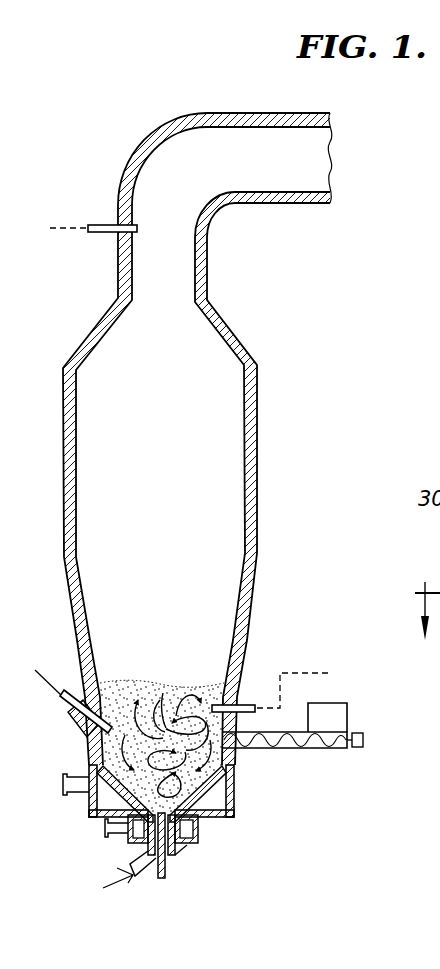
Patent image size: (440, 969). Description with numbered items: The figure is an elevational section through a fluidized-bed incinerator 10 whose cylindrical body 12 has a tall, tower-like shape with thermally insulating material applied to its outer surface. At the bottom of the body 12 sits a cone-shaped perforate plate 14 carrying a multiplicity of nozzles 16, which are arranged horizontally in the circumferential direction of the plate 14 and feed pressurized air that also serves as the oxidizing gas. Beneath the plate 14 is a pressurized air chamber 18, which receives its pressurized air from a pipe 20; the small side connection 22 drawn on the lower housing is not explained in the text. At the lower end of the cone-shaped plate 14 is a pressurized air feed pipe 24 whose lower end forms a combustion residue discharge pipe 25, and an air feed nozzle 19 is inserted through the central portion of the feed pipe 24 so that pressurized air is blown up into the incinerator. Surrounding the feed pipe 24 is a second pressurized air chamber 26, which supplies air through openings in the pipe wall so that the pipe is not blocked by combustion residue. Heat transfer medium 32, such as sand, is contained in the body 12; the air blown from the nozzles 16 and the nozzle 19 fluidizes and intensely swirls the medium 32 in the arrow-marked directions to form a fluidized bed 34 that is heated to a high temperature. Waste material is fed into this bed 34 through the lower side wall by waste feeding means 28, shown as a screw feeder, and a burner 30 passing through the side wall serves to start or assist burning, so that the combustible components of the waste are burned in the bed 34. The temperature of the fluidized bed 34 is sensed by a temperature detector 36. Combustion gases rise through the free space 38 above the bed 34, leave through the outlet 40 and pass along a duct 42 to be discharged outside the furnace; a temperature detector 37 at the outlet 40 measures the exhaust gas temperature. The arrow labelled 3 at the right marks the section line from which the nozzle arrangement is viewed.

The incinerator 10 is at (76, 626).
The cylindrical body 12 is at (83, 580).
The cone-shaped perforate plate 14 is at (230, 789).
The nozzles 16 is at (198, 823).
The pressurized air chamber 18 is at (233, 806).
The air feed nozzle 19 is at (166, 878).
The pipe 20 is at (65, 787).
The inlet connection 22 is at (106, 832).
The pressurized air feed pipe 24 is at (178, 856).
The combustion residue discharge pipe 25 is at (148, 872).
The pressurized air chamber 26 is at (198, 842).
The waste feeding means 28 is at (313, 748).
The burner 30 is at (67, 697).
The heat transfer medium 32 is at (100, 748).
The fluidized bed 34 is at (237, 760).
The temperature detector 36 is at (247, 700).
The temperature detector 37 is at (102, 225).
The free space 38 is at (183, 468).
The outlet 40 is at (178, 268).
The duct 42 is at (328, 128).
The section line 3 is at (416, 614).